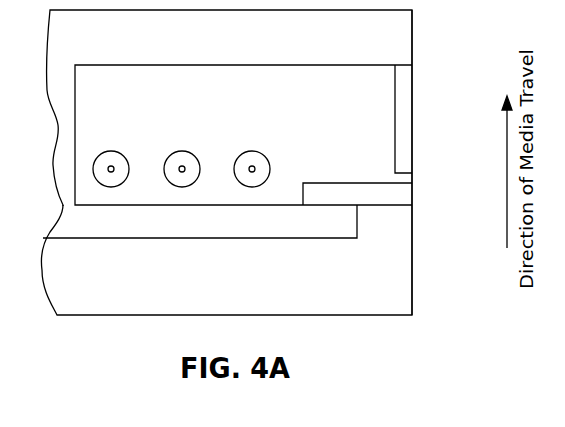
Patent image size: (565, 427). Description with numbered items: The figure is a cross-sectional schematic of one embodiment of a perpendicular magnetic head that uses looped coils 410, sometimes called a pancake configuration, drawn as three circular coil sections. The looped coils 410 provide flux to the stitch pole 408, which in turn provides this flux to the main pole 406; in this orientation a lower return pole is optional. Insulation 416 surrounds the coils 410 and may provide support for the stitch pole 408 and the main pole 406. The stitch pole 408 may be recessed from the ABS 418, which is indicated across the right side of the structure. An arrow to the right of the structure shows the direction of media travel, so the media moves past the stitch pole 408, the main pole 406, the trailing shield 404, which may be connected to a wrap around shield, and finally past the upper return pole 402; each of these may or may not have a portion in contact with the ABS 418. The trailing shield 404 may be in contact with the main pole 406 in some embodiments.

The upper return pole 402 is at (316, 45).
The trailing shield 404 is at (412, 98).
The main pole 406 is at (412, 190).
The stitch pole 408 is at (260, 232).
The looped coils 410 is at (116, 152).
The insulation 416 is at (355, 139).
The ABS 418 is at (413, 27).